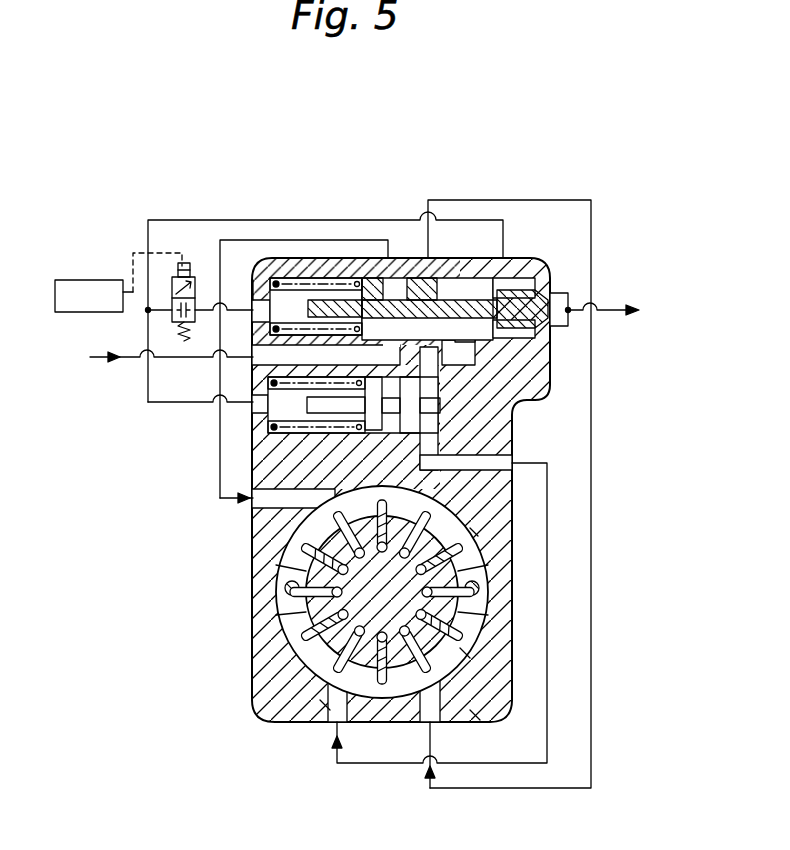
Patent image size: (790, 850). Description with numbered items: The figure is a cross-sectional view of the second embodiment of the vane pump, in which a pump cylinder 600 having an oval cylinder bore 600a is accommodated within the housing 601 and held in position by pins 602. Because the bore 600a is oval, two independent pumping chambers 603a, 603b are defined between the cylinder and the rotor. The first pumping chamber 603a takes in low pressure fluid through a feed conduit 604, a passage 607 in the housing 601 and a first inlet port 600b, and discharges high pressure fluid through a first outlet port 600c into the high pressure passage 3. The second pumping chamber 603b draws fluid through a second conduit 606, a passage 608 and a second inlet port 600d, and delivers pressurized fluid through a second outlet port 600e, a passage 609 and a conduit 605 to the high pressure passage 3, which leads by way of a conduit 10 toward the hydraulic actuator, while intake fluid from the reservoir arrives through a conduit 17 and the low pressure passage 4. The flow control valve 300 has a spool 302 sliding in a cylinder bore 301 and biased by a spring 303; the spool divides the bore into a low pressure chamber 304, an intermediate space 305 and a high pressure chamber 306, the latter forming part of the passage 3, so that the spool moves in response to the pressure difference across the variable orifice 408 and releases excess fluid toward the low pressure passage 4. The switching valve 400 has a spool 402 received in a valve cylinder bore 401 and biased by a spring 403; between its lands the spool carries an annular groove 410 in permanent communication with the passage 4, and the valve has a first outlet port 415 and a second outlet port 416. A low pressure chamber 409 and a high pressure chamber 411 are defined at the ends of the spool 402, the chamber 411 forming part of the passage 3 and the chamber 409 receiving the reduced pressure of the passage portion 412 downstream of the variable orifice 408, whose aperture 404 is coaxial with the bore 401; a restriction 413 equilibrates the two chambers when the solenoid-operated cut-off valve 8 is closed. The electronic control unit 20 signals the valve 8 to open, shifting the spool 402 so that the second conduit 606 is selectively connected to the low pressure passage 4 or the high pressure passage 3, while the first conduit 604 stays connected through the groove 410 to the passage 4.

The internal high pressure passage 3 is at (458, 341).
The low pressure passage 4 is at (326, 349).
The solenoid-operated cut-off valve 8 is at (171, 290).
The conduit 10 is at (613, 310).
The conduit 17 is at (118, 356).
The electronic control unit 20 is at (80, 279).
The flow control valve 300 is at (377, 438).
The cylinder bore 301 is at (268, 447).
The spool 302 is at (498, 388).
The spring 303 is at (267, 381).
The low pressure chamber 304 is at (278, 402).
The intermediate space 305 is at (268, 534).
The high pressure chamber 306 is at (440, 420).
The switching valve 400 is at (404, 230).
The valve cylinder bore 401 is at (292, 288).
The spool 402 is at (446, 282).
The spring 403 is at (266, 287).
The orifice aperture 404 is at (552, 348).
The variable orifice 408 is at (532, 288).
The low pressure chamber 409 is at (280, 290).
The annular groove 410 is at (407, 275).
The high pressure chamber 411 is at (517, 278).
The passage portion 412 is at (556, 275).
The restriction 413 is at (430, 275).
The first outlet port 415 is at (390, 275).
The second outlet port 416 is at (457, 284).
The pump cylinder 600 is at (256, 627).
The cylinder bore 600a is at (399, 712).
The first inlet port 600b is at (273, 584).
The first outlet port 600c is at (465, 538).
The second inlet port 600d is at (455, 652).
The second outlet port 600e is at (318, 653).
The housing 601 is at (478, 712).
The pins 602 is at (481, 587).
The first pumping chamber 603a is at (514, 490).
The second pumping chamber 603b is at (362, 712).
The feed conduit 604 is at (220, 468).
The conduit 605 is at (549, 574).
The second conduit 606 is at (590, 496).
The passage 607 is at (268, 501).
The passage 608 is at (433, 710).
The passage 609 is at (327, 703).